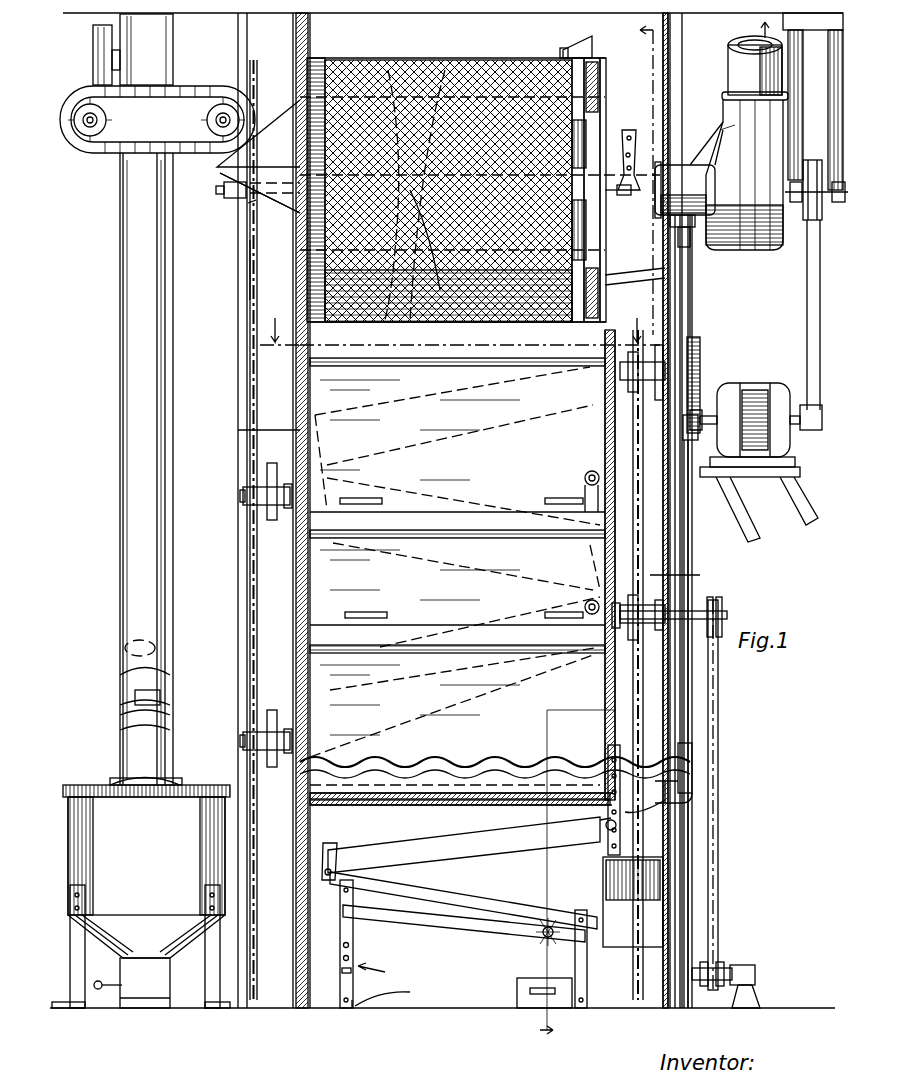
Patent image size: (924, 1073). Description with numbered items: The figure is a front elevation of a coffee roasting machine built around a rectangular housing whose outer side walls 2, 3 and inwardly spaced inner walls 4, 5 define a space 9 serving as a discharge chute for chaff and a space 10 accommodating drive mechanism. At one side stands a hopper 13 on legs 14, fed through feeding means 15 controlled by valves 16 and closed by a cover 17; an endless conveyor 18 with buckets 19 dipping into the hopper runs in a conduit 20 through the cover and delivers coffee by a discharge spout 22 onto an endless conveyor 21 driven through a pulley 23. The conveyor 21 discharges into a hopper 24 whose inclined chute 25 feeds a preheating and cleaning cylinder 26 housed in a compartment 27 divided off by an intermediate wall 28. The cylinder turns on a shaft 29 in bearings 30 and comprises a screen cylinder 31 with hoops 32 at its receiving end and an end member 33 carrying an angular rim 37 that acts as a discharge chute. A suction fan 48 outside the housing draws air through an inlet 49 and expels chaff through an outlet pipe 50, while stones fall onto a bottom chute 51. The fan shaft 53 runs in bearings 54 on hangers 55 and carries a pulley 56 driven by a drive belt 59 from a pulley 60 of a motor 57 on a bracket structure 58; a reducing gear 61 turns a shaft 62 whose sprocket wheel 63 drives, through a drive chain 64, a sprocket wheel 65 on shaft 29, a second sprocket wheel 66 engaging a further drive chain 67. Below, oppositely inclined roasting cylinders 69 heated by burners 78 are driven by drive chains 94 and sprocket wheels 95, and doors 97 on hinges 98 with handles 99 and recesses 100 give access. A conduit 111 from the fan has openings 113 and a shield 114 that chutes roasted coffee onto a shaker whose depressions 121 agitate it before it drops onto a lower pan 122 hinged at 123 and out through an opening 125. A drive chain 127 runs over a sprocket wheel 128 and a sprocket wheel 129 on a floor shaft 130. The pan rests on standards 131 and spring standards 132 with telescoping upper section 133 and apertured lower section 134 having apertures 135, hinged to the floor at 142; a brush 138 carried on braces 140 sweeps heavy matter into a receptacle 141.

The side wall 2 is at (672, 538).
The side wall 3 is at (237, 402).
The inner wall 4 is at (640, 740).
The inner wall 5 is at (300, 380).
The space 9 is at (690, 578).
The space 10 is at (270, 437).
The hopper 13 is at (146, 871).
The legs 14 is at (80, 1000).
The feeding means 15 is at (148, 1000).
The valves 16 is at (108, 970).
The cover 17 is at (82, 790).
The endless conveyor 18 is at (126, 680).
The buckets 19 is at (170, 700).
The conduit 20 is at (160, 510).
The endless conveyor 21 is at (115, 150).
The discharge spout 22 is at (148, 62).
The pulley 23 is at (100, 42).
The hopper 24 is at (258, 156).
The chute 25 is at (292, 200).
The preheating and cleaning cylinder 26 is at (475, 52).
The preheating and cleaning compartment 27 is at (480, 181).
The intermediate wall 28 is at (444, 206).
The shaft 29 is at (620, 225).
The bearings 30 is at (224, 194).
The screen cylinder 31 is at (425, 58).
The hoops 32 is at (316, 56).
The end member 33 is at (612, 60).
The rim 37 is at (583, 50).
The suction fan 48 is at (755, 218).
The inlet 49 is at (680, 175).
The outlet pipe 50 is at (745, 67).
The bottom chute 51 is at (670, 830).
The fan shaft 53 is at (840, 205).
The bearings 54 is at (796, 205).
The hangers 55 is at (790, 72).
The pulley 56 is at (818, 162).
The motor 57 is at (755, 390).
The bracket structure 58 is at (755, 485).
The drive belt 59 is at (806, 316).
The pulley 60 is at (820, 428).
The reducing gear 61 is at (702, 395).
The shaft 62 is at (692, 328).
The sprocket wheel 63 is at (652, 665).
The drive chain 64 is at (668, 275).
The sprocket wheel 65 is at (642, 145).
The sprocket wheel 66 is at (250, 205).
The drive chain 67 is at (253, 280).
The roasting cylinders 69 is at (525, 420).
The burners 78 is at (596, 472).
The drive chains 94 is at (250, 340).
The sprocket wheels 95 is at (258, 520).
The doors 97 is at (457, 532).
The hinges 98 is at (382, 363).
The handles 99 is at (362, 498).
The recesses 100 is at (585, 480).
The conduit 111 is at (690, 565).
The openings 113 is at (475, 812).
The shield 114 is at (582, 829).
The depressions 121 is at (388, 848).
The pan 122 is at (505, 910).
The hinge 123 is at (325, 873).
The opening 125 is at (603, 870).
The drive chain 127 is at (720, 728).
The sprocket wheel 128 is at (722, 602).
The sprocket wheel 129 is at (722, 968).
The shaft 130 is at (756, 975).
The standards 131 is at (588, 975).
The spring standards 132 is at (392, 971).
The upper section 133 is at (340, 922).
The lower section 134 is at (347, 1002).
The apertures 135 is at (343, 945).
The brush 138 is at (540, 940).
The braces 140 is at (450, 920).
The receptacle 141 is at (525, 997).
The hinge 142 is at (405, 992).